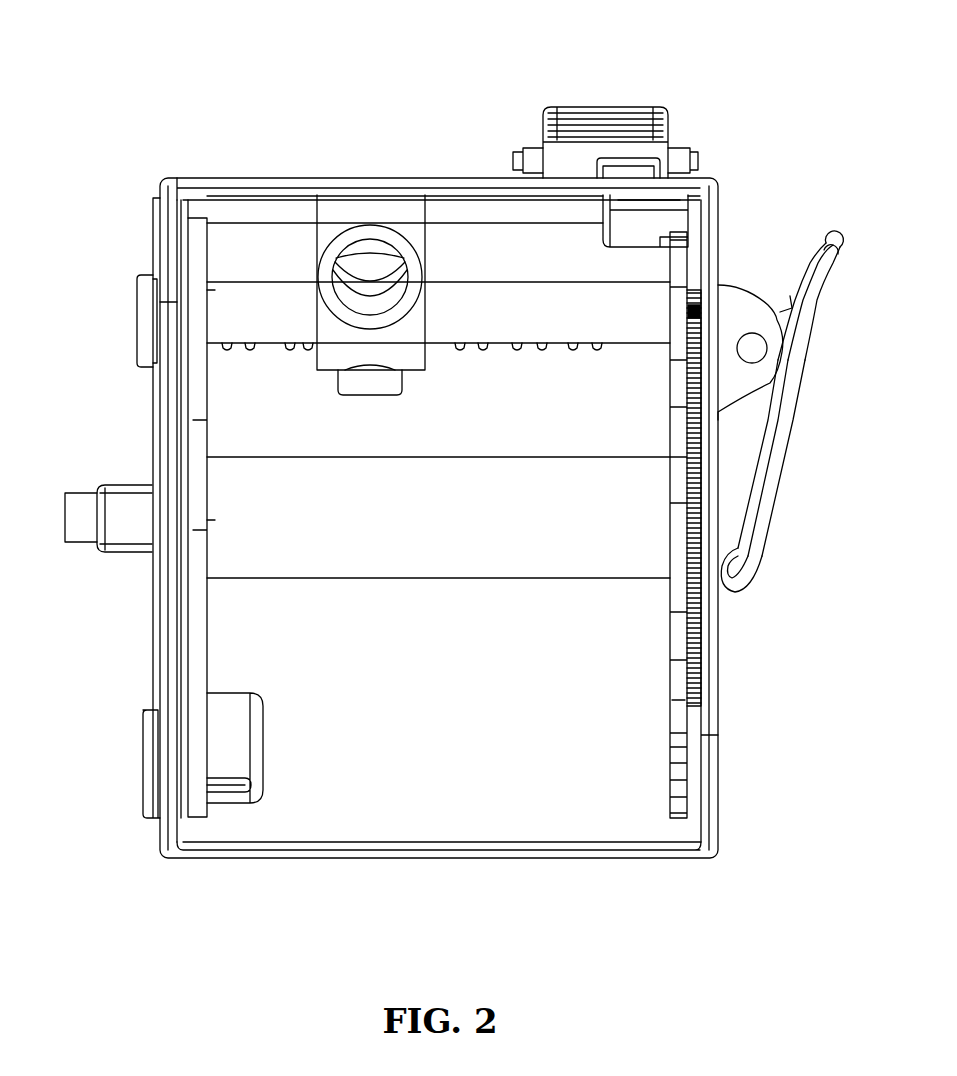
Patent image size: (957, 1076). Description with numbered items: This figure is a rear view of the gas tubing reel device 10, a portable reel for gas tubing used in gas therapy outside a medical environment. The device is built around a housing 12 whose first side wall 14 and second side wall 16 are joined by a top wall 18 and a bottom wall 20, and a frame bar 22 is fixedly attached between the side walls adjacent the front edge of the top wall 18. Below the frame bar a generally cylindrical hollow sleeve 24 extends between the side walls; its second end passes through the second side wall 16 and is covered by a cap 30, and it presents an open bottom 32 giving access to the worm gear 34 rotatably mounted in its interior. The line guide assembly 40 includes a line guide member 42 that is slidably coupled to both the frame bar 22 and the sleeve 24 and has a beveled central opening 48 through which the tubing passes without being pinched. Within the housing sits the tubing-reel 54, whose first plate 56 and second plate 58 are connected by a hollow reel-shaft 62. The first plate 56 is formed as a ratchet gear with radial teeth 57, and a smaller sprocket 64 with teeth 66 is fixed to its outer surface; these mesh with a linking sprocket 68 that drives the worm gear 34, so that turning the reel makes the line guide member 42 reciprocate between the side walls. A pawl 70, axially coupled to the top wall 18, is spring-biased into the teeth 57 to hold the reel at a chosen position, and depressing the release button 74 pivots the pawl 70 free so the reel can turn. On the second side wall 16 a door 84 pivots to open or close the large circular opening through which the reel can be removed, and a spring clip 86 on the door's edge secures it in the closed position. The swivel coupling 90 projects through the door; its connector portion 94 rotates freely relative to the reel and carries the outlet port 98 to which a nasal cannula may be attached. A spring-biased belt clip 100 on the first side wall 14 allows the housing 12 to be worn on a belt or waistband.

The gas tubing reel device 10 is at (434, 72).
The housing 12 is at (196, 140).
The first side wall 14 is at (717, 790).
The second side wall 16 is at (160, 838).
The top wall 18 is at (290, 180).
The bottom wall 20 is at (540, 852).
The frame bar 22 is at (462, 200).
The sleeve 24 is at (242, 329).
The cap 30 is at (137, 295).
The open bottom 32 is at (580, 340).
The worm gear 34 is at (495, 352).
The line guide assembly 40 is at (446, 263).
The line guide member 42 is at (437, 232).
The central opening 48 is at (340, 247).
The tubing-reel 54 is at (391, 600).
The first plate 56 is at (670, 638).
The teeth 57 is at (673, 683).
The second plate 58 is at (207, 613).
The reel-shaft 62 is at (252, 544).
The sprocket 64 is at (700, 608).
The teeth 66 is at (695, 650).
The linking sprocket 68 is at (693, 312).
The pawl 70 is at (620, 243).
The release button 74 is at (620, 107).
The door 84 is at (153, 675).
The spring clip 86 is at (265, 732).
The swivel coupling 90 is at (96, 448).
The connector portion 94 is at (120, 540).
The outlet port 98 is at (65, 523).
The belt clip 100 is at (803, 418).